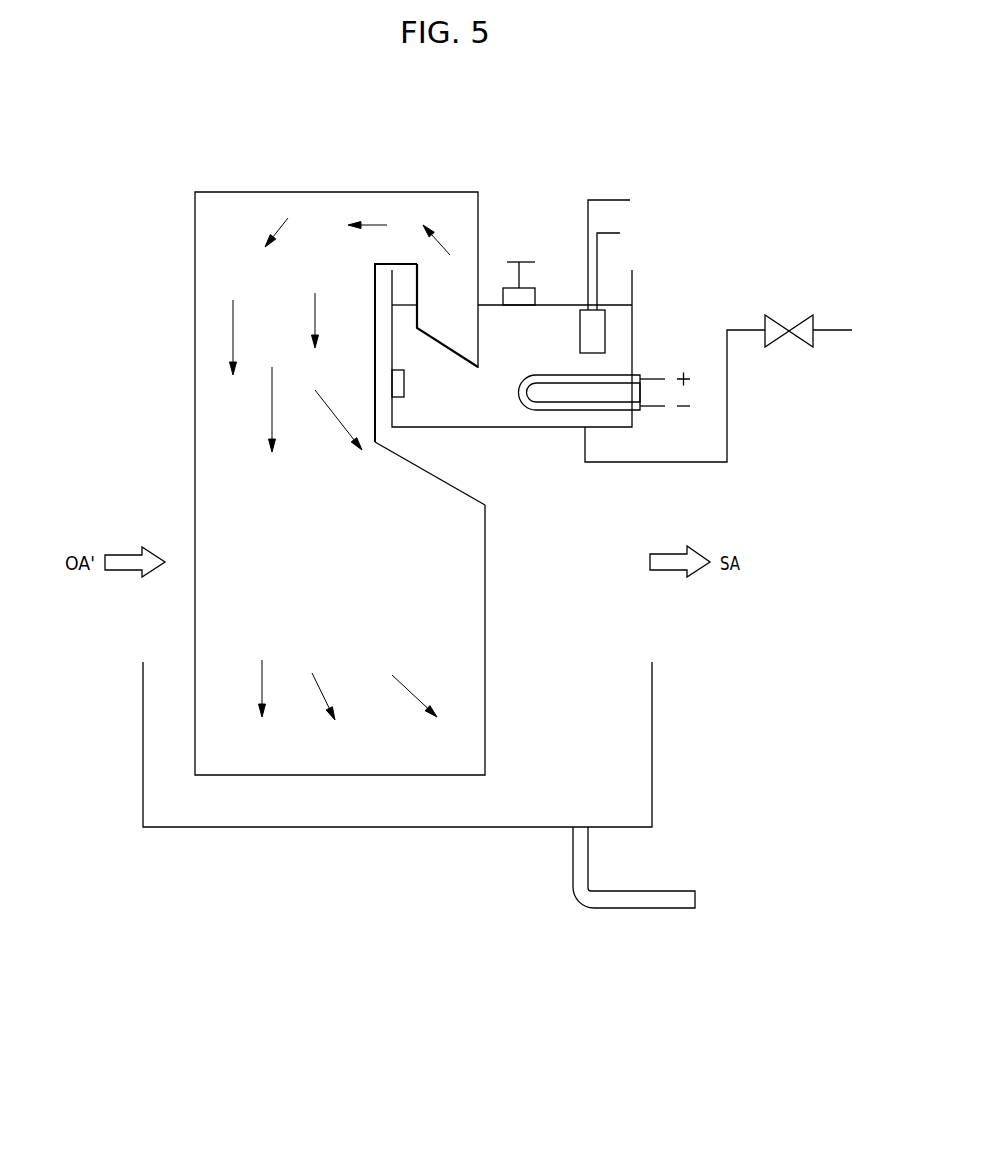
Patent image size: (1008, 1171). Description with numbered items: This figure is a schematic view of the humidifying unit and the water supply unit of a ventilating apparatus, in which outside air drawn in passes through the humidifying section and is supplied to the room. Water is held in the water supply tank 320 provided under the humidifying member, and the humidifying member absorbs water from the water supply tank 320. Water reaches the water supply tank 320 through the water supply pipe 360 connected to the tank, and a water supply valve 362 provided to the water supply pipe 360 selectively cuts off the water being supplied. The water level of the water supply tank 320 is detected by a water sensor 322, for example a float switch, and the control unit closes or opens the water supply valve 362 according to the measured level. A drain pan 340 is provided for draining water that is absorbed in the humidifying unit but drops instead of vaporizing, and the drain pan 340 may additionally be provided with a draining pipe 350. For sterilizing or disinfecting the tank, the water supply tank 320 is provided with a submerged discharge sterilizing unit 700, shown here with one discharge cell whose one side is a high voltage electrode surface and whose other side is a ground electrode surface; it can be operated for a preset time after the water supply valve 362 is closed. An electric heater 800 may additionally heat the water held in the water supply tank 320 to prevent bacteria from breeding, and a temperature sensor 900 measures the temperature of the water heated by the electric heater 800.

The water supply tank 320 is at (632, 290).
The water sensor 322 is at (538, 296).
The drain pan 340 is at (250, 828).
The draining pipe 350 is at (633, 898).
The water supply pipe 360 is at (727, 412).
The water supply valve 362 is at (781, 318).
The submerged discharge sterilizing unit 700 is at (605, 330).
The electric heater 800 is at (546, 405).
The temperature sensor 900 is at (405, 382).